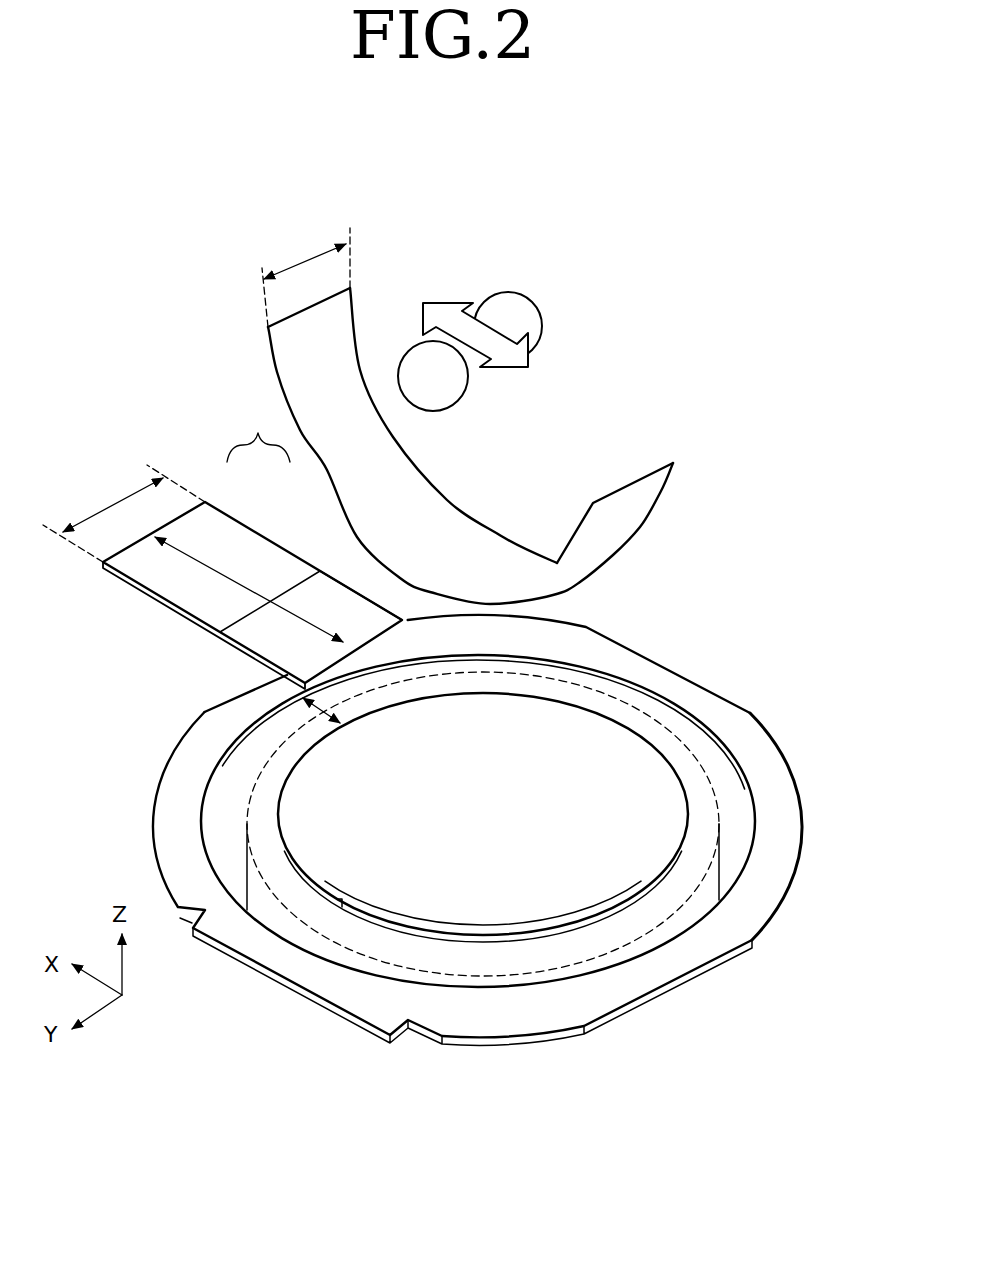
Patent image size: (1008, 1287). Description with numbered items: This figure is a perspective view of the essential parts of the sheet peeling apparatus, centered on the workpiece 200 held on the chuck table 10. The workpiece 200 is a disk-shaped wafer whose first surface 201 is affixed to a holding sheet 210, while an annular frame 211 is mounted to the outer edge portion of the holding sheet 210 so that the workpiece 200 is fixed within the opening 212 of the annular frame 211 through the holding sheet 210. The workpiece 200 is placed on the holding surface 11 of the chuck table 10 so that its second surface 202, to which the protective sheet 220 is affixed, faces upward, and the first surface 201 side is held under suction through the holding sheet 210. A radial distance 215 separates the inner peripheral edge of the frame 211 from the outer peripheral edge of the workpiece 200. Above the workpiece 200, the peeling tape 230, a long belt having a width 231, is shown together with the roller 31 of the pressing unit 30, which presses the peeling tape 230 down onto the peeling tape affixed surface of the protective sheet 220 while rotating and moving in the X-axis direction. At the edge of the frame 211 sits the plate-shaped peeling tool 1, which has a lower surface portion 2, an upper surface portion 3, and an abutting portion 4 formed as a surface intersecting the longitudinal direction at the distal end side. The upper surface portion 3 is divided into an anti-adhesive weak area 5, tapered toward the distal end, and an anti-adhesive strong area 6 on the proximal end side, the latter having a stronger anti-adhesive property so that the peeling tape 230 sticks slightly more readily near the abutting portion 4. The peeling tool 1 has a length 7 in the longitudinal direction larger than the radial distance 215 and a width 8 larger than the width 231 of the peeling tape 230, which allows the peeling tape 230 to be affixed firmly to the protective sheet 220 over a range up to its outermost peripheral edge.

The peeling tool 1 is at (222, 537).
The lower surface portion 2 is at (198, 623).
The upper surface portion 3 is at (258, 432).
The abutting portion 4 is at (467, 437).
The anti-adhesive weak area 5 is at (333, 587).
The anti-adhesive strong area 6 is at (250, 537).
The length 7 is at (188, 548).
The width 8 is at (124, 513).
The chuck table 10 is at (669, 721).
The holding surface 11 is at (633, 729).
The pressing unit 30 is at (518, 312).
The roller 31 is at (508, 326).
The workpiece 200 is at (483, 815).
The first surface 201 is at (587, 923).
The second surface 202 is at (667, 870).
The holding sheet 210 is at (720, 763).
The annular frame 211 is at (763, 750).
The opening 212 is at (743, 805).
The radial distance 215 is at (303, 699).
The protective sheet 220 is at (577, 733).
The peeling tape 230 is at (506, 552).
The width 231 is at (306, 277).